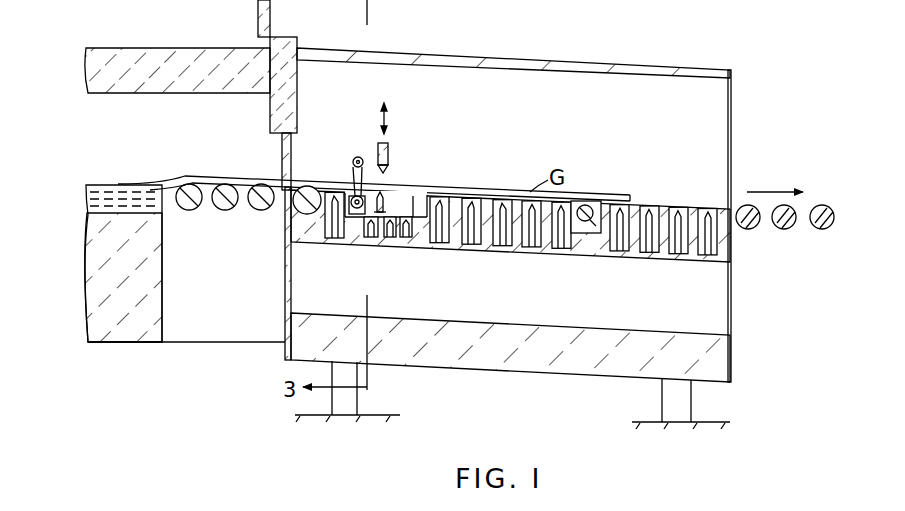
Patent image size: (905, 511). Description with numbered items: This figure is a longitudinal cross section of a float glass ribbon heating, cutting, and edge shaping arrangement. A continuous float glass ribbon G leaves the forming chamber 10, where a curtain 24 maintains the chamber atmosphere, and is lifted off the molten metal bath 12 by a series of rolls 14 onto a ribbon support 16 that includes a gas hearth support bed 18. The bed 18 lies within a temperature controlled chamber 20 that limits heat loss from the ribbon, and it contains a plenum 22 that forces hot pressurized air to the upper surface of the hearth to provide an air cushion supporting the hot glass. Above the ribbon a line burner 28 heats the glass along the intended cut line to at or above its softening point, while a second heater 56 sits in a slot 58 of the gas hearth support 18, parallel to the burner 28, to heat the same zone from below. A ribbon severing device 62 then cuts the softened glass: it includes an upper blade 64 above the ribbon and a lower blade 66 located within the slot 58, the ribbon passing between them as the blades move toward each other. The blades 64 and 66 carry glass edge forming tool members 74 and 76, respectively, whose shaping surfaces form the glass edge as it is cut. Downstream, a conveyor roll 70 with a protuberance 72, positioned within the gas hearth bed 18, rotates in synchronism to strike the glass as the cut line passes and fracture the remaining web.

The forming chamber 10 is at (182, 53).
The molten metal bath 12 is at (90, 202).
The rolls 14 is at (300, 205).
The ribbon support 16 is at (728, 240).
The gas hearth support bed 18 is at (413, 243).
The temperature controlled chamber 20 is at (583, 62).
The plenum 22 is at (729, 300).
The curtain 24 is at (282, 155).
The line burner 28 is at (355, 158).
The second heater 56 is at (352, 197).
The slot 58 is at (412, 212).
The ribbon severing device 62 is at (405, 162).
The upper blade 64 is at (380, 148).
The lower blade 66 is at (352, 212).
The conveyor roll 70 is at (586, 204).
The protuberance 72 is at (594, 215).
The glass edge forming tool member 74 is at (393, 145).
The glass edge forming tool member 76 is at (380, 214).